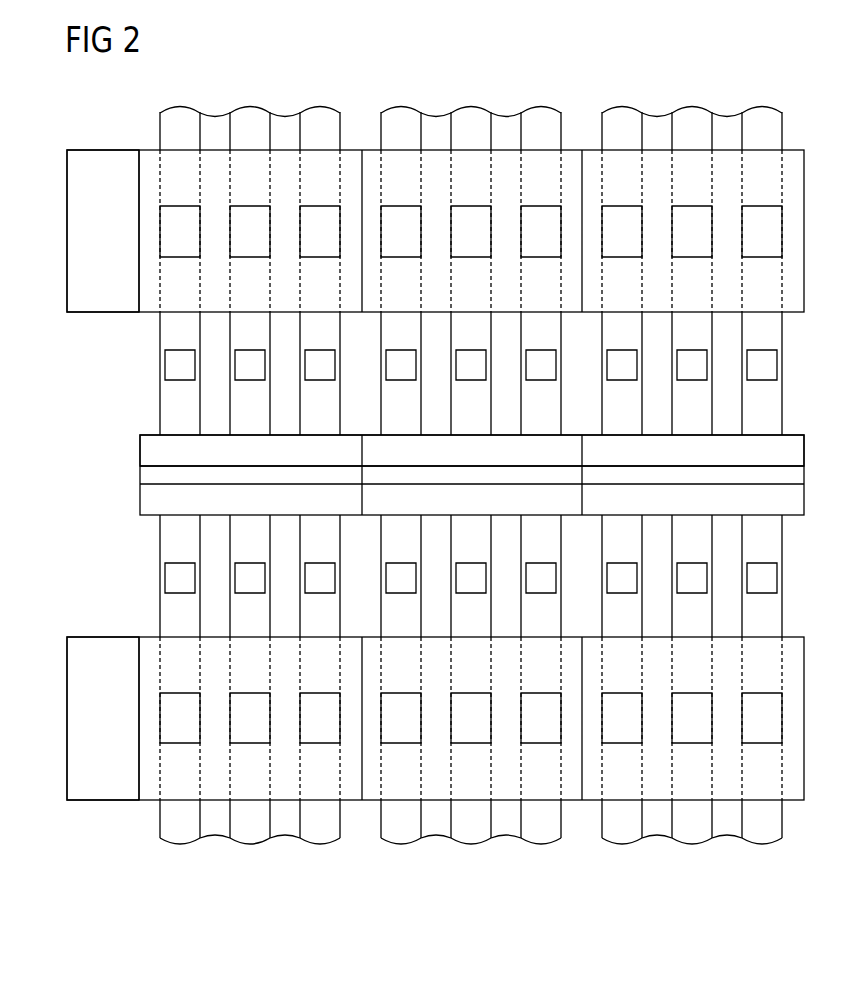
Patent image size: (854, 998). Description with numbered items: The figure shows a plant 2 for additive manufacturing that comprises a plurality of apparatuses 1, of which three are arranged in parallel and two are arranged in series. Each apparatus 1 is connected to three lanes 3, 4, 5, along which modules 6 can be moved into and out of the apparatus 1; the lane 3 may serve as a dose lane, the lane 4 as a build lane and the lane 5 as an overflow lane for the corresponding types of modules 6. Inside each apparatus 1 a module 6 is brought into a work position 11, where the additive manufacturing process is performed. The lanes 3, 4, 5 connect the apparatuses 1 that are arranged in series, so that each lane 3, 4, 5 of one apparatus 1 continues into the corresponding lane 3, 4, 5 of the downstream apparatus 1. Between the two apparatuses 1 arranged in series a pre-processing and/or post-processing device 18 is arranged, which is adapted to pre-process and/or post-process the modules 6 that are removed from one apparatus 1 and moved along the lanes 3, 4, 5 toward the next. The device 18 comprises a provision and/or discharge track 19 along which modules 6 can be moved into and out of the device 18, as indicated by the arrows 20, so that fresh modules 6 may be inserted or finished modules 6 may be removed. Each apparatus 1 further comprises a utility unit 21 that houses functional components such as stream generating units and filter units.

The apparatus 1 is at (372, 148).
The plant 2 is at (285, 900).
The lane 3 is at (160, 420).
The lane 4 is at (229, 428).
The lane 5 is at (300, 428).
The module 6 is at (233, 355).
The work position 11 is at (228, 222).
The pre-processing and/or post-processing device 18 is at (168, 498).
The provision and/or discharge track 19 is at (165, 465).
The arrows 20 is at (170, 475).
The utility unit 21 is at (105, 150).